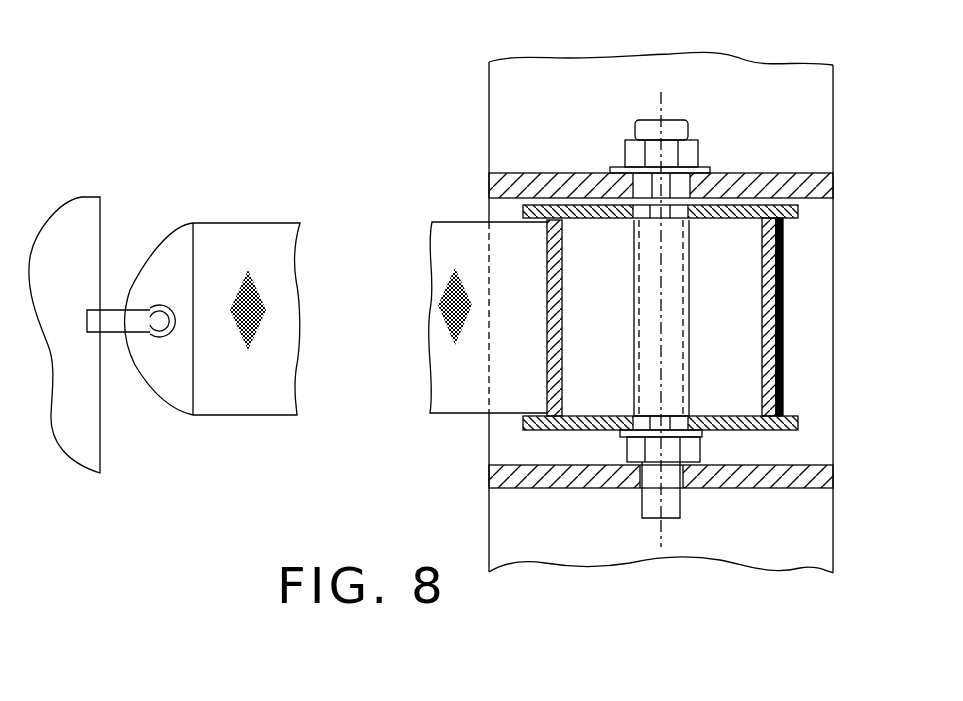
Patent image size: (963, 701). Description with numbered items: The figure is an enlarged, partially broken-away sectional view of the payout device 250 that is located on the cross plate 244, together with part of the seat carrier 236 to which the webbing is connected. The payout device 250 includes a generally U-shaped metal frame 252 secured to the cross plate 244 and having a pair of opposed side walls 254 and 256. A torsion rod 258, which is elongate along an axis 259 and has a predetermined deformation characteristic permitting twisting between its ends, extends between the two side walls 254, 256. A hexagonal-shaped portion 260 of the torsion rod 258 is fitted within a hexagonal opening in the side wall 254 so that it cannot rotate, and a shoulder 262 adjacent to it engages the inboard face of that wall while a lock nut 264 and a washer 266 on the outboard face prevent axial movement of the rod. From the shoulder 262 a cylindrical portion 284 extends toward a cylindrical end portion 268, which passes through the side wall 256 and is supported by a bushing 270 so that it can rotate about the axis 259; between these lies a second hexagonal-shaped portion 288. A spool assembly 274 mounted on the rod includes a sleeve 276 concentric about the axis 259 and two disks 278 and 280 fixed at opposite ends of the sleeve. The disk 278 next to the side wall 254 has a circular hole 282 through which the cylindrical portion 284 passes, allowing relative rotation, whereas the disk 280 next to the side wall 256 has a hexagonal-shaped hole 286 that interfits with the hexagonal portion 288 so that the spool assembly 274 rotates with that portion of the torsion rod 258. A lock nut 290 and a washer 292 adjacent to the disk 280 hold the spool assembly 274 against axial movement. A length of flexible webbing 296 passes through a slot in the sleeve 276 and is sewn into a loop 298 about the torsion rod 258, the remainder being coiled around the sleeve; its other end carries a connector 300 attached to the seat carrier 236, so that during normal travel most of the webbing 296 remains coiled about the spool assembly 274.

The seat carrier 236 is at (95, 185).
The cross plate 244 is at (788, 80).
The payout device 250 is at (838, 155).
The frame 252 is at (547, 162).
The side wall 254 is at (823, 183).
The side wall 256 is at (793, 490).
The torsion rod 258 is at (672, 539).
The axis 259 is at (662, 103).
The hexagonal-shaped portion 260 is at (725, 173).
The shoulder 262 is at (703, 201).
The lock nut 264 is at (632, 150).
The washer 266 is at (608, 172).
The cylindrical end portion 268 is at (650, 495).
The bushing 270 is at (690, 487).
The spool assembly 274 is at (812, 393).
The sleeve 276 is at (765, 295).
The disk 278 is at (798, 212).
The disk 280 is at (798, 420).
The circular hole 282 is at (633, 205).
The cylindrical portion 284 is at (675, 222).
The hexagonal-shaped hole 286 is at (637, 413).
The hexagonal-shaped portion 288 is at (683, 413).
The lock nut 290 is at (628, 450).
The washer 292 is at (705, 433).
The webbing 296 is at (440, 230).
The loop 298 is at (647, 313).
The connector 300 is at (106, 318).